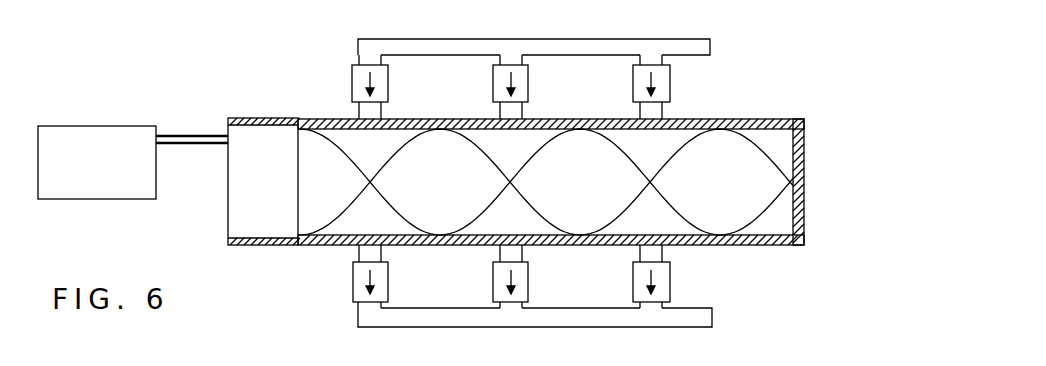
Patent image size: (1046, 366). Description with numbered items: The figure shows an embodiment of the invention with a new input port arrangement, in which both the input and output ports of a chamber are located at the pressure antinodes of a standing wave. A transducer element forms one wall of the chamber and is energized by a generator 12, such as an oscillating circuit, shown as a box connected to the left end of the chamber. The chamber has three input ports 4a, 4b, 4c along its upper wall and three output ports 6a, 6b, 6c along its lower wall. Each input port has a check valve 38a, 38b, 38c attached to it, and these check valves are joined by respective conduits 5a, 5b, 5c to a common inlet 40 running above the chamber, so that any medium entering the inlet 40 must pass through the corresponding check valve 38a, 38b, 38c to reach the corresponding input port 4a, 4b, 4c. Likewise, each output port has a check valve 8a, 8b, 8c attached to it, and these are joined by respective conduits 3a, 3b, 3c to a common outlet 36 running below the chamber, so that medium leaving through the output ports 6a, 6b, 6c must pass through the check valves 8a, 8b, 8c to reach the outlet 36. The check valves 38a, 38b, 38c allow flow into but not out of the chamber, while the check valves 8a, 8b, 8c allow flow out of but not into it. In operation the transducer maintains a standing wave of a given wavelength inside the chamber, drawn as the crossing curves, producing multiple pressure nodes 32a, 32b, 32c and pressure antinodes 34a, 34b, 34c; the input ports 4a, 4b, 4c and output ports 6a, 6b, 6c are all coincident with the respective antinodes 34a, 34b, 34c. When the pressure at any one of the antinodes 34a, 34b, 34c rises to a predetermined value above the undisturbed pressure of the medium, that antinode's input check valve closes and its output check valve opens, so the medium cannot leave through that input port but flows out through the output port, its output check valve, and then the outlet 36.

The generator 12 is at (97, 162).
The inlet 40 is at (710, 50).
The outlet 36 is at (712, 318).
The check valve 38a is at (640, 87).
The check valve 38b is at (500, 87).
The check valve 38c is at (362, 87).
The check valve 8a is at (660, 282).
The check valve 8b is at (522, 282).
The check valve 8c is at (380, 282).
The conduit 5a is at (648, 62).
The conduit 5b is at (510, 60).
The conduit 5c is at (368, 60).
The input port 4a is at (645, 118).
The input port 4b is at (505, 118).
The input port 4c is at (360, 118).
The output port 6a is at (655, 246).
The output port 6b is at (515, 244).
The output port 6c is at (373, 246).
The conduit 3a is at (652, 304).
The conduit 3b is at (512, 305).
The conduit 3c is at (370, 304).
The pressure node 32a is at (722, 137).
The pressure node 32b is at (580, 138).
The pressure node 32c is at (442, 136).
The pressure antinode 34a is at (650, 180).
The pressure antinode 34b is at (510, 180).
The pressure antinode 34c is at (370, 180).